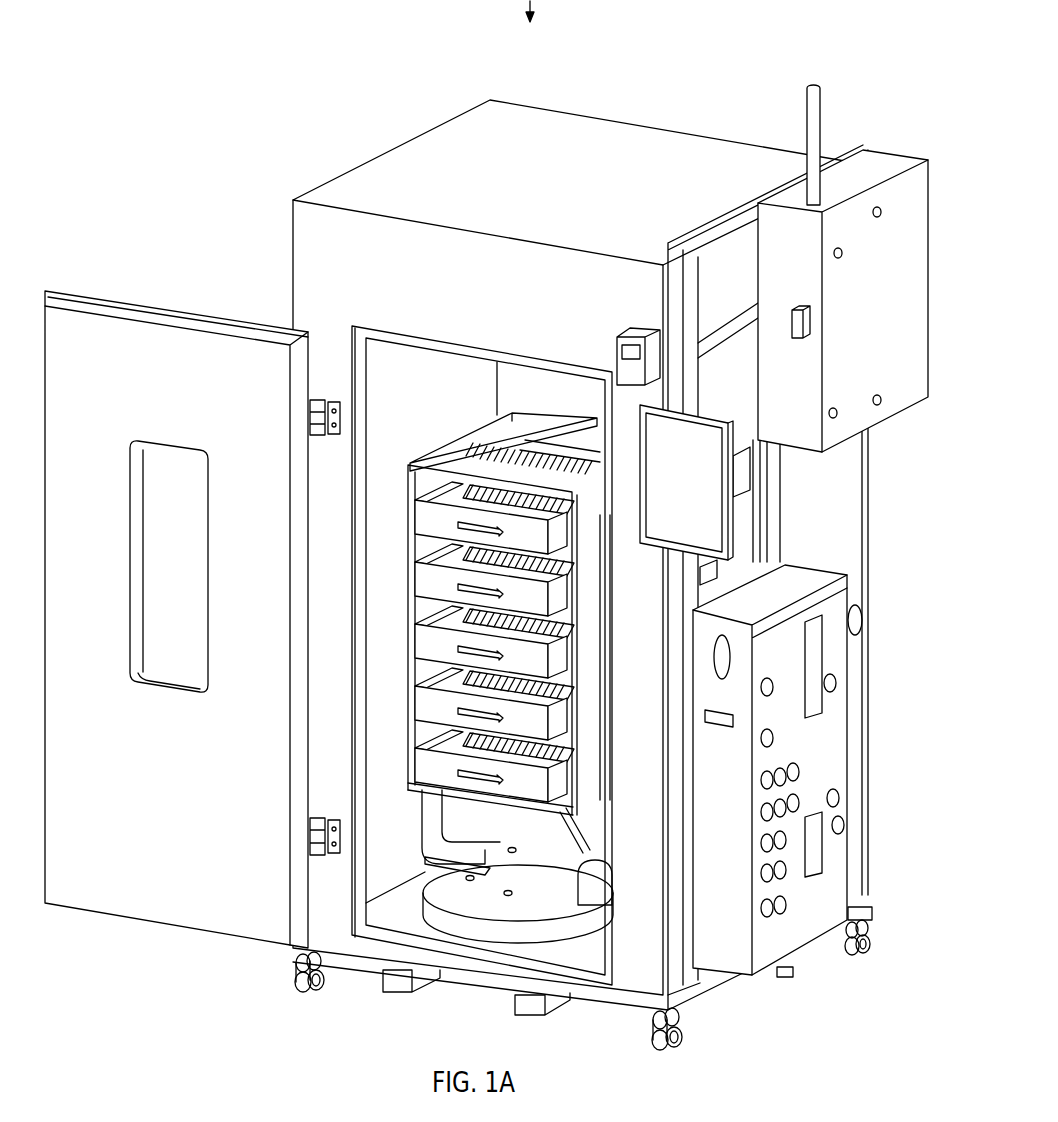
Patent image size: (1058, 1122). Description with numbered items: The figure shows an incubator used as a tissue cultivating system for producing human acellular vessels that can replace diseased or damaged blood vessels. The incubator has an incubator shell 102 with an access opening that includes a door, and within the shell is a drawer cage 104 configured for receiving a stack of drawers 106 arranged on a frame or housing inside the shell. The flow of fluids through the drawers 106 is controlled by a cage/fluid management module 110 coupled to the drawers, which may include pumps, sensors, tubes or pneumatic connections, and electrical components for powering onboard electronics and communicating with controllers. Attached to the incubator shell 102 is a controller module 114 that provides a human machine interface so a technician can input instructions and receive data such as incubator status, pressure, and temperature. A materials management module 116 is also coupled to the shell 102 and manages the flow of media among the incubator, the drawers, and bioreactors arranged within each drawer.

The incubator shell 102 is at (305, 248).
The drawer cage 104 is at (445, 441).
The drawers 106 is at (420, 514).
The cage/fluid management module 110 is at (598, 640).
The controller module 114 is at (915, 208).
The materials management module 116 is at (822, 746).